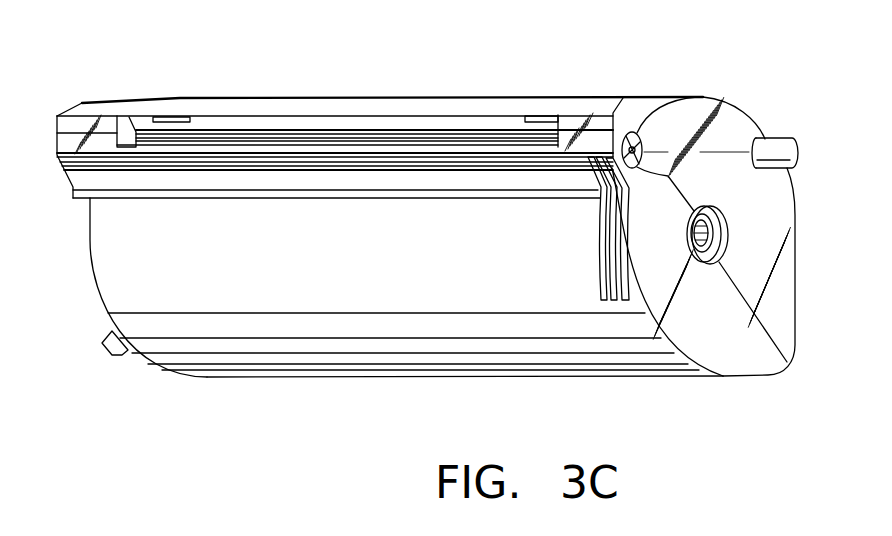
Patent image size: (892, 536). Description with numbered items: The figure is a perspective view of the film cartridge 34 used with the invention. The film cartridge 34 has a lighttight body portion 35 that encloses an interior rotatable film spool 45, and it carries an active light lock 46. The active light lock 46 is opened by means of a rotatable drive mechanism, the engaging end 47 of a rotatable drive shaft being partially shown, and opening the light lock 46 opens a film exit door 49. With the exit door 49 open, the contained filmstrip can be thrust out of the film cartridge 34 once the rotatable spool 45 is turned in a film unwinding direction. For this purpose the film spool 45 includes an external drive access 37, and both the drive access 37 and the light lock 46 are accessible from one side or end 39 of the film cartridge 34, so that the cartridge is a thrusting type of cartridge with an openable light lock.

The film cartridge 34 is at (405, 64).
The lighttight body portion 35 is at (369, 357).
The external drive access 37 is at (706, 264).
The side or end of the film cartridge 39 is at (752, 368).
The rotatable film spool 45 is at (717, 209).
The active light lock 46 is at (650, 109).
The engaging end of rotatable drive shaft 47 is at (794, 138).
The film exit door 49 is at (276, 122).